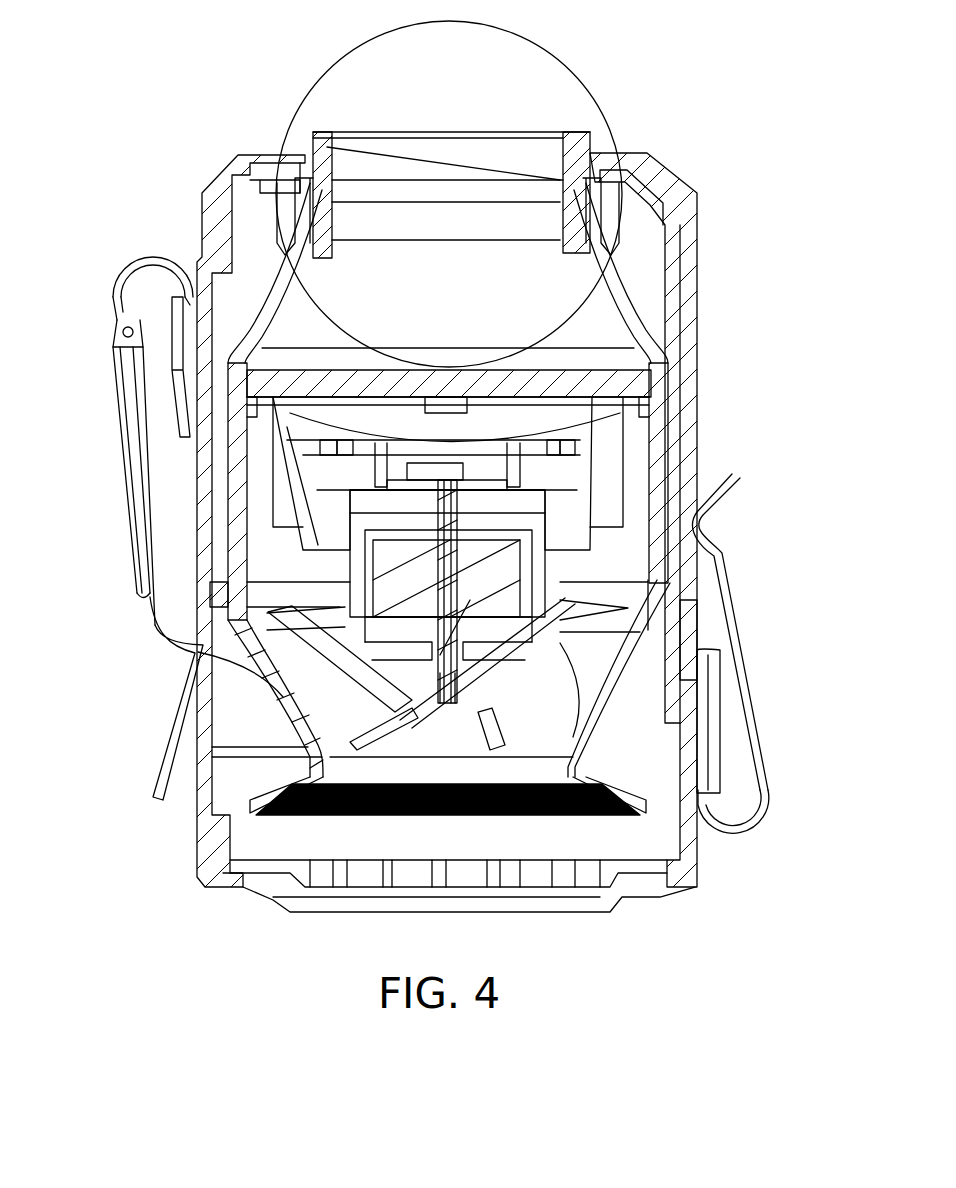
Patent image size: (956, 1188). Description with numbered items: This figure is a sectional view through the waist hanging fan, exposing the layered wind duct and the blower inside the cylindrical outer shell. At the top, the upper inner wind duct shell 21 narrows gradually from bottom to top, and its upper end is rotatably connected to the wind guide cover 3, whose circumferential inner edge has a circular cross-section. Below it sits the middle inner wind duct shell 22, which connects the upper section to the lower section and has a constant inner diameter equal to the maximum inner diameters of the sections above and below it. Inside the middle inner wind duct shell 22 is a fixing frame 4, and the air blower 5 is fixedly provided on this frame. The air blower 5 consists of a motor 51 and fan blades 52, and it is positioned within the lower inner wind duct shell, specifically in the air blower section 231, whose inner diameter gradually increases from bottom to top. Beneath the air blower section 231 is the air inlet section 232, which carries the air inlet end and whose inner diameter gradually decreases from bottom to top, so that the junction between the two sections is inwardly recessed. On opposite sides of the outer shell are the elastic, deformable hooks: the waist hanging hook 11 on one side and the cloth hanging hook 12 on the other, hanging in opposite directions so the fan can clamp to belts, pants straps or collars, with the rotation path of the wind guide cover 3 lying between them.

The wind guide cover 3 is at (515, 150).
The upper inner wind duct shell 21 is at (278, 302).
The waist hanging hook 11 is at (121, 315).
The middle inner wind duct shell 22 is at (240, 492).
The fixing frame 4 is at (610, 452).
The air blower 5 is at (796, 512).
The motor 51 is at (505, 582).
The fan blade 52 is at (525, 640).
The air blower section 231 is at (198, 652).
The air inlet section 232 is at (275, 785).
The cloth hanging hook 12 is at (756, 718).